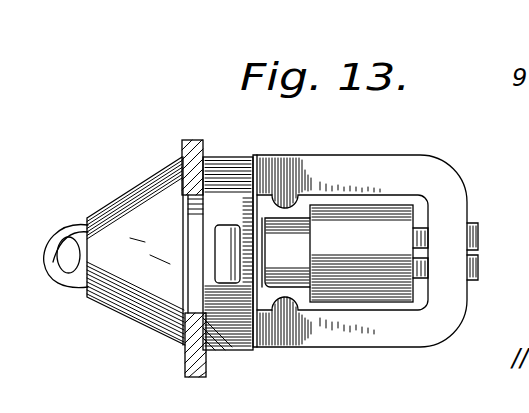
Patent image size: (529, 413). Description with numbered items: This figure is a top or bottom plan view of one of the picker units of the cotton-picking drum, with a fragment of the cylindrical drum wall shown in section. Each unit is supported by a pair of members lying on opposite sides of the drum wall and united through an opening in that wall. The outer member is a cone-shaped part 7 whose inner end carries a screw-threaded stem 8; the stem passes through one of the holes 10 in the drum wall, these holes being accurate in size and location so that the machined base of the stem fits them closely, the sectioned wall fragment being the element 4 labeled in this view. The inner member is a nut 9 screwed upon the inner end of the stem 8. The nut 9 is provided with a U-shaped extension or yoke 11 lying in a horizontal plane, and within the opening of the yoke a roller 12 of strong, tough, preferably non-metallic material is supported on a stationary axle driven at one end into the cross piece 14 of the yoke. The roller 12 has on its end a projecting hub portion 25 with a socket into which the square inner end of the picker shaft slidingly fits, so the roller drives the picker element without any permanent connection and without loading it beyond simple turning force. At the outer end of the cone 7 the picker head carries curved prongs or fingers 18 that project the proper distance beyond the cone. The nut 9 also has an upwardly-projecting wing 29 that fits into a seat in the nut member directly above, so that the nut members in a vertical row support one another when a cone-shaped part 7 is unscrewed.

The flange 4 is at (183, 141).
The outer cone-shaped part 7 is at (137, 184).
The screw-threaded stem 8 is at (190, 232).
The nut 9 is at (227, 157).
The holes 10 is at (232, 352).
The U-shaped extension or yoke 11 is at (355, 163).
The roller 12 is at (369, 253).
The cross piece of the yoke 14 is at (455, 208).
The curved prongs or fingers 18 is at (71, 279).
The projecting hub portion 25 is at (286, 252).
The upwardly-projecting wing 29 is at (232, 220).